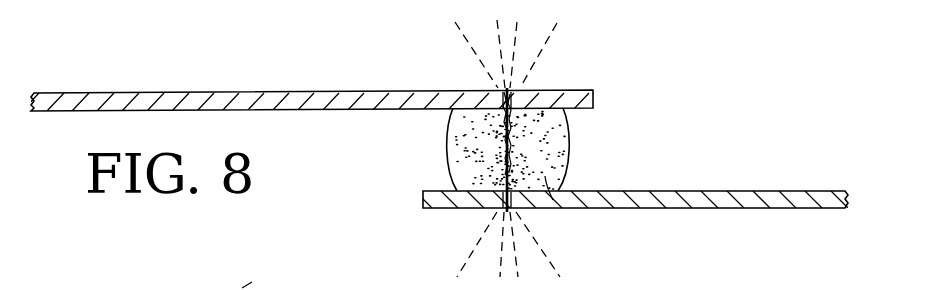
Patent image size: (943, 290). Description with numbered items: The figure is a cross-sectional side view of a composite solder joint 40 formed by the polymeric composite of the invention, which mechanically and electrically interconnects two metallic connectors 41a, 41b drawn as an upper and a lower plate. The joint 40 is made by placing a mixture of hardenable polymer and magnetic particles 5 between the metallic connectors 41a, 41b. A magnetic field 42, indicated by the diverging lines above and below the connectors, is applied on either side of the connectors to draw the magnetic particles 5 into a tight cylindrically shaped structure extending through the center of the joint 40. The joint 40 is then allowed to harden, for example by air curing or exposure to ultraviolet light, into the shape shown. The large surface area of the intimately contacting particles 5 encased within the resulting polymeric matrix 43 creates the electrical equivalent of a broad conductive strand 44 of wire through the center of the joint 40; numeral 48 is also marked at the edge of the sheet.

The magnetic particles 5 is at (548, 175).
The composite solder joint 40 is at (430, 154).
The metallic connector 41a is at (383, 93).
The metallic connector 41b is at (683, 198).
The magnetic field 42 is at (483, 243).
The polymeric matrix 43 is at (553, 148).
The conductive strand 44 is at (512, 92).
The reference 48 is at (265, 280).